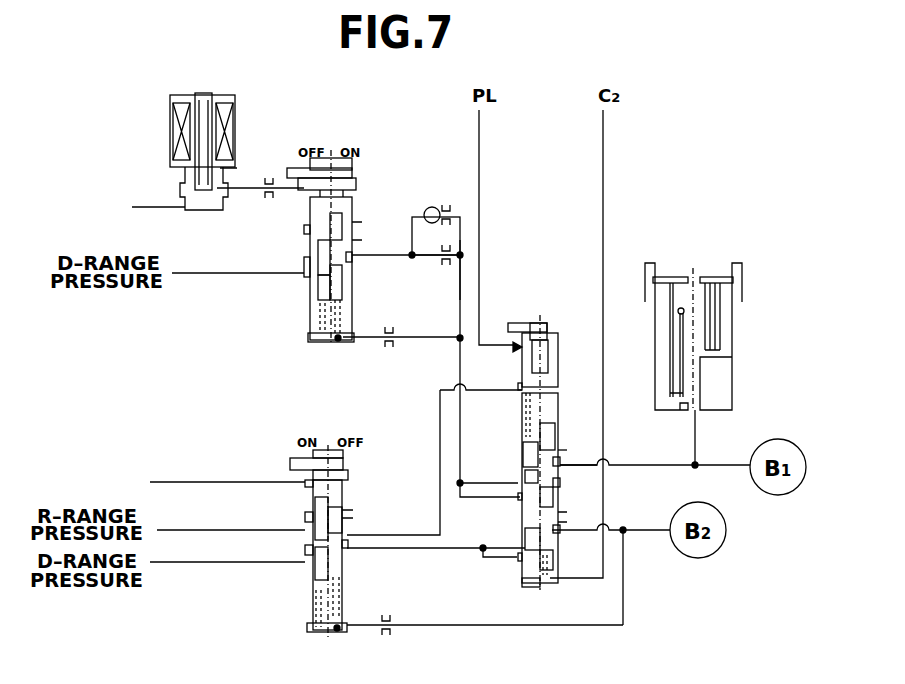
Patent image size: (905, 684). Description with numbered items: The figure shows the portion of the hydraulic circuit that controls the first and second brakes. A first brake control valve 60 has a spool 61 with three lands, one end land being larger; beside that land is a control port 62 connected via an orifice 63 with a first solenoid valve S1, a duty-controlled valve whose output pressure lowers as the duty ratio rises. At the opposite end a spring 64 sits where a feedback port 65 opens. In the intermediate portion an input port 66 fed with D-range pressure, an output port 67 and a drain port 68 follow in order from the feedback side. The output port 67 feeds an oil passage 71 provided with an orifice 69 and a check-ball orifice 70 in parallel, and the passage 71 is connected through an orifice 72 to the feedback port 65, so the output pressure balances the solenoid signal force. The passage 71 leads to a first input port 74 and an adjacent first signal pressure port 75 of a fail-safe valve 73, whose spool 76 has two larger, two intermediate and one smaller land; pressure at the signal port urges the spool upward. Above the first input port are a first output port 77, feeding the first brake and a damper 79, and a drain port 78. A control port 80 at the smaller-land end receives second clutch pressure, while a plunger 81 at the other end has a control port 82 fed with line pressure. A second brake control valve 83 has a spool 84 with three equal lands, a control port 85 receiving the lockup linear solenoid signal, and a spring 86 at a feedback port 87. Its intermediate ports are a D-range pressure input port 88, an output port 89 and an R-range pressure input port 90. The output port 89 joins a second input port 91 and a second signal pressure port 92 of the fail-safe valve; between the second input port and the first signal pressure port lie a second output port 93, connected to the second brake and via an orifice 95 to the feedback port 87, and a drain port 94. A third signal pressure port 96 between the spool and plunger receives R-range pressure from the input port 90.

The first solenoid valve S1 is at (170, 152).
The first brake control valve 60 is at (338, 238).
The spool 61 is at (310, 288).
The control port 62 is at (308, 178).
The orifice 63 is at (266, 198).
The spring 64 is at (337, 340).
The feedback port 65 is at (348, 341).
The input port 66 is at (310, 270).
The output port 67 is at (350, 260).
The drain port 68 is at (352, 250).
The orifice 69 is at (462, 248).
The orifice having a check ball 70 is at (449, 205).
The oil passage 71 is at (462, 280).
The orifice 72 is at (392, 340).
The fail-safe valve 73 is at (534, 432).
The first input port 74 is at (518, 478).
The first signal pressure port 75 is at (518, 495).
The spool 76 is at (557, 432).
The first output port 77 is at (602, 463).
The drain port 78 is at (558, 455).
The damper 79 is at (733, 342).
The control port 80 is at (553, 580).
The plunger 81 is at (556, 355).
The control port 82 is at (518, 345).
The second brake control valve 83 is at (320, 554).
The spool 84 is at (315, 582).
The control port 85 is at (305, 478).
The spring 86 is at (343, 617).
The feedback port 87 is at (353, 631).
The D-range pressure input port 88 is at (310, 560).
The output port 89 is at (350, 540).
The R-range pressure input port 90 is at (310, 527).
The second input port 91 is at (520, 540).
The second signal pressure port 92 is at (518, 562).
The second output port 93 is at (556, 530).
The drain port 94 is at (558, 516).
The orifice 95 is at (395, 630).
The third signal pressure port 96 is at (516, 386).